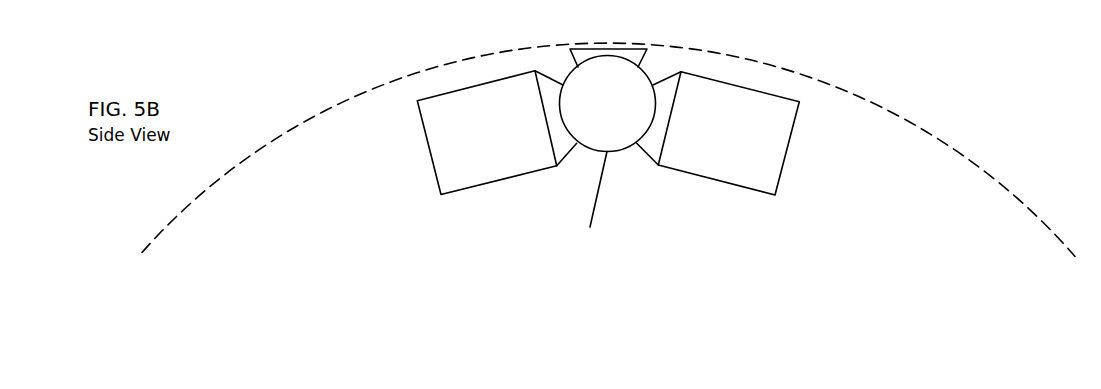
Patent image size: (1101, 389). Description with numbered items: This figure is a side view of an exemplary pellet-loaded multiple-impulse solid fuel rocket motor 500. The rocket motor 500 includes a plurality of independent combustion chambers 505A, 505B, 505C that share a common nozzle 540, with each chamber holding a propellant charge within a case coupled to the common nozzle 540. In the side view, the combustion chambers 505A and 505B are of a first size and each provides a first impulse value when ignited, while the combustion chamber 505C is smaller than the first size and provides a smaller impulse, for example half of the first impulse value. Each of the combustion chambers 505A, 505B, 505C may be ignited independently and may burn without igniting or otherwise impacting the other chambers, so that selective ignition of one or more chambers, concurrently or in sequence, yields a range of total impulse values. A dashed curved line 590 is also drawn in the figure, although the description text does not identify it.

The pellet-loaded multiple-impulse rocket motor 500 is at (320, 322).
The combustion chamber 505A is at (500, 180).
The combustion chamber 505B is at (692, 175).
The combustion chamber 505C is at (590, 227).
The common nozzle 540 is at (647, 51).
The curved window surface 590 is at (862, 98).